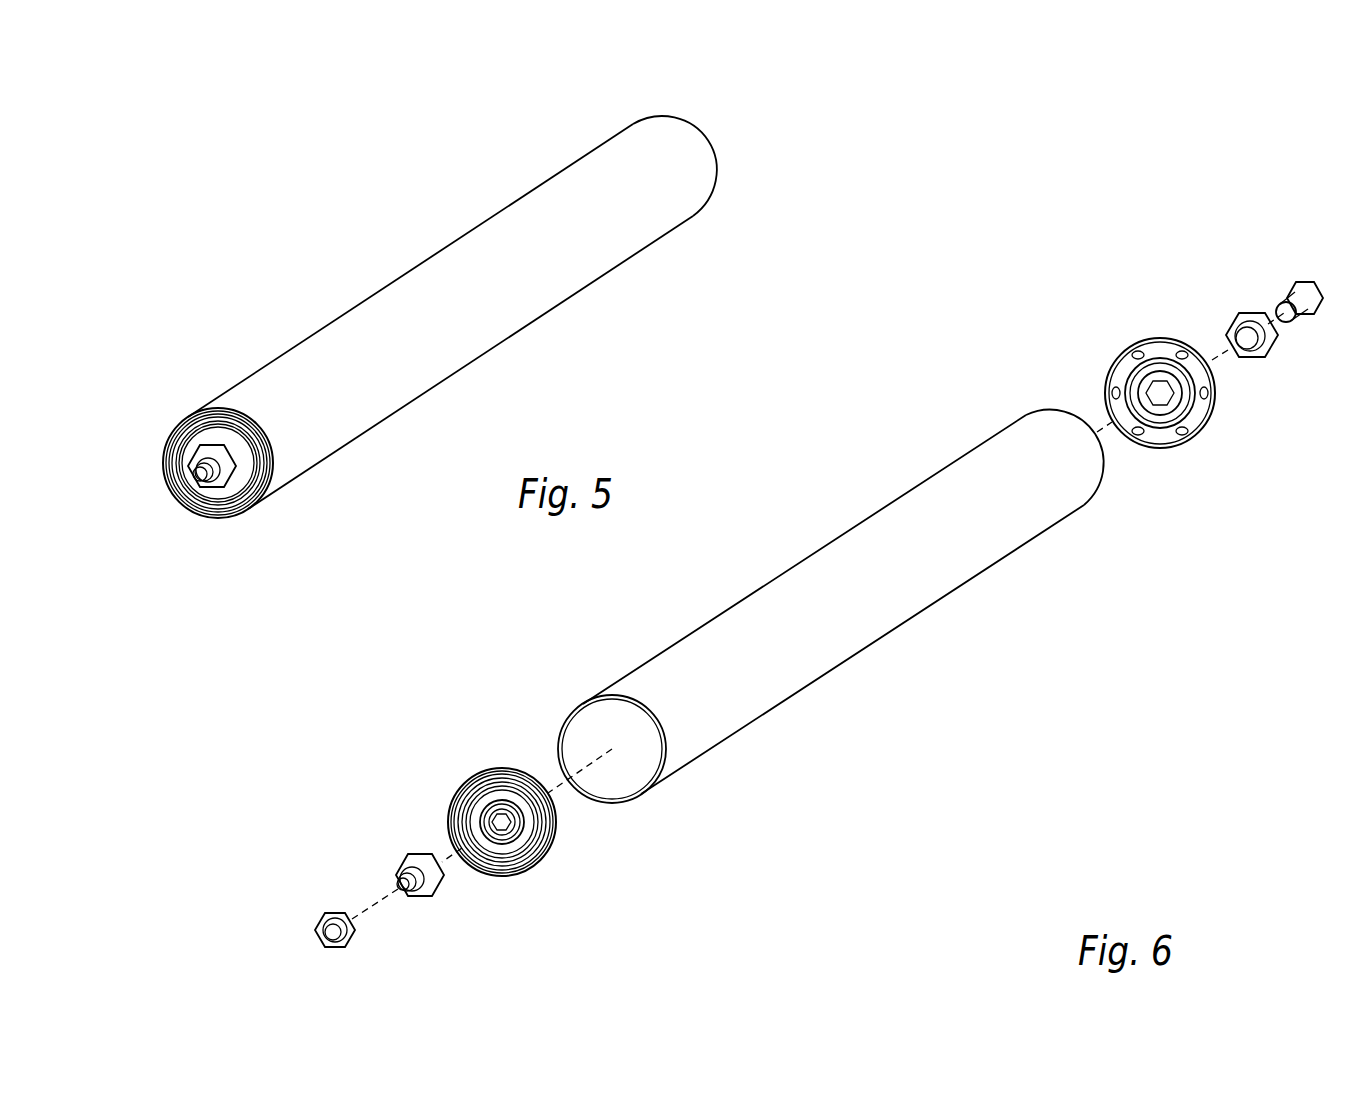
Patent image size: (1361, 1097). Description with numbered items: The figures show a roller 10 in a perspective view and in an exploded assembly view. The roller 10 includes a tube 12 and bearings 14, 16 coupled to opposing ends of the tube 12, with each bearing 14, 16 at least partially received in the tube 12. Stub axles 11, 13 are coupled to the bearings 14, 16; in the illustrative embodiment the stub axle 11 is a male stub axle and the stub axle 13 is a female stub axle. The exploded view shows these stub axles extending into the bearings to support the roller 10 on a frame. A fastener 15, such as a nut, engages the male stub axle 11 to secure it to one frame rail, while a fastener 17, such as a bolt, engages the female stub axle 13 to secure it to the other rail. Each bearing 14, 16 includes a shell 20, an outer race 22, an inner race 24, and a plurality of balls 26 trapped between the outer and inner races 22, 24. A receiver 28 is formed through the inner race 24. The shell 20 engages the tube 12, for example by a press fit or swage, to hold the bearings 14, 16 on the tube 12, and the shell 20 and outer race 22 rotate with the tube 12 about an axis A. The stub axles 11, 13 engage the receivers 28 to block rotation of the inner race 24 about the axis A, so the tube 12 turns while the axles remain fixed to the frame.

In FIG. 5, the roller 10 is at (226, 118).
In FIG. 6, the roller 10 is at (1246, 216).
In FIG. 5, the male stub axle 11 is at (214, 492).
In FIG. 6, the male stub axle 11 is at (404, 846).
In FIG. 5, the tube 12 is at (424, 252).
In FIG. 6, the tube 12 is at (946, 616).
In FIG. 5, the female stub axle 13 is at (678, 190).
In FIG. 6, the female stub axle 13 is at (1226, 310).
In FIG. 5, the bearing 14 is at (176, 447).
In FIG. 6, the bearing 14 is at (560, 853).
In FIG. 6, the fastener 15 is at (316, 906).
In FIG. 5, the bearing 16 is at (640, 149).
In FIG. 6, the bearing 16 is at (1218, 424).
In FIG. 6, the fastener 17 is at (1316, 288).
In FIG. 6, the shell 20 is at (520, 765).
In FIG. 6, the outer race 22 is at (492, 790).
In FIG. 6, the inner race 24 is at (510, 850).
In FIG. 6, the balls 26 is at (544, 824).
In FIG. 6, the receiver 28 is at (486, 822).
In FIG. 6, the axis A is at (1108, 416).